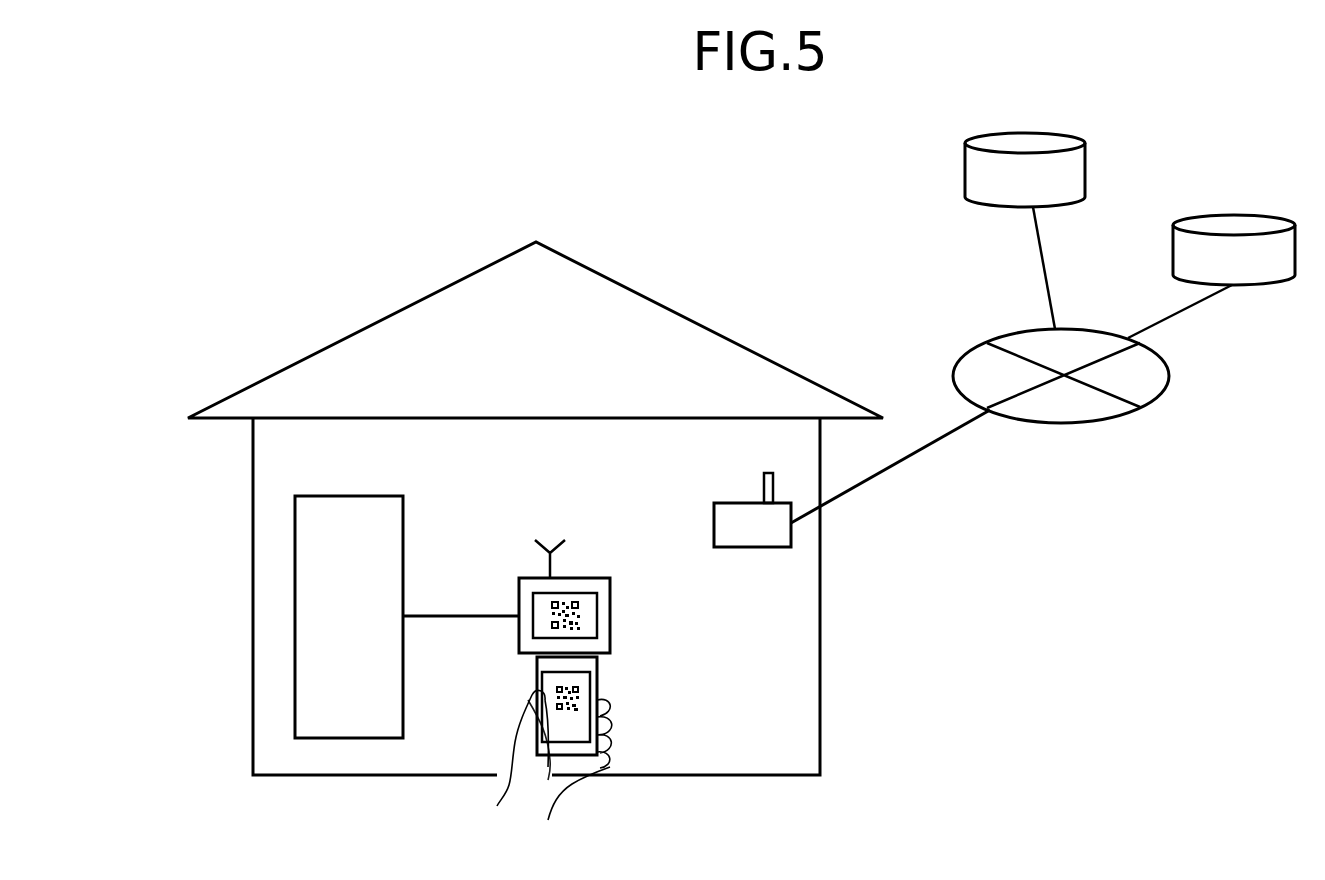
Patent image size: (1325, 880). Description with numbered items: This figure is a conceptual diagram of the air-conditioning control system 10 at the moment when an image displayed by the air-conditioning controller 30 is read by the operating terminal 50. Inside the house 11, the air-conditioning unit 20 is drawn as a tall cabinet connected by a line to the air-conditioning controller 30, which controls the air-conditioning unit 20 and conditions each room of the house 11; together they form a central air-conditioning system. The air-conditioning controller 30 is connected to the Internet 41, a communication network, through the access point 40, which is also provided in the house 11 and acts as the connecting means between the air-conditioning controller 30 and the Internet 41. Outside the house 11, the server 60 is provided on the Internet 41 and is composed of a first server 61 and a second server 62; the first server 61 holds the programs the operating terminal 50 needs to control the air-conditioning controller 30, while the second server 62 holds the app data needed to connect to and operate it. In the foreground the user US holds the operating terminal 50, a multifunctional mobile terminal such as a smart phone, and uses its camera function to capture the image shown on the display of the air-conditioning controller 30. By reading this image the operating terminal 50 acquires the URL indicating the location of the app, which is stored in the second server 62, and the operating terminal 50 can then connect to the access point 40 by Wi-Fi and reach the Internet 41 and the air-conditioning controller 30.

The air-conditioning control system 10 is at (928, 641).
The house 11 is at (394, 311).
The air-conditioning unit 20 is at (348, 739).
The air-conditioning controller 30 is at (611, 614).
The access point 40 is at (791, 536).
The Internet 41 is at (1065, 427).
The operating terminal 50 is at (598, 678).
The server 60 is at (1130, 227).
The first server 61 is at (1128, 150).
The second server 62 is at (1086, 163).
The user US is at (548, 812).